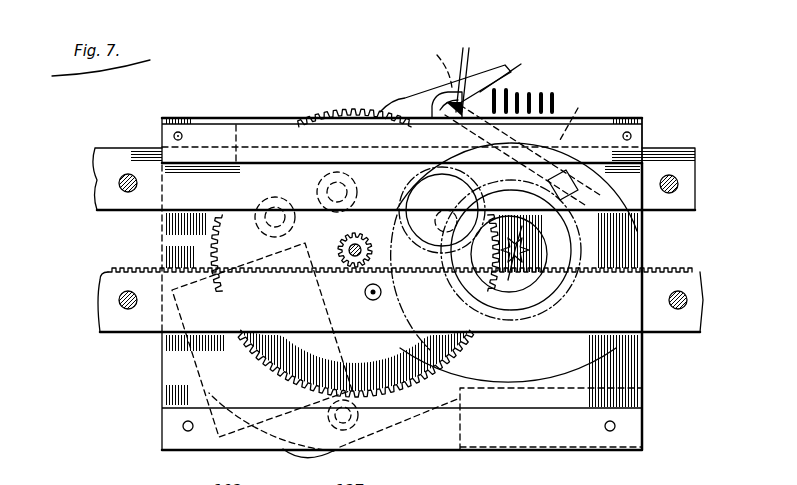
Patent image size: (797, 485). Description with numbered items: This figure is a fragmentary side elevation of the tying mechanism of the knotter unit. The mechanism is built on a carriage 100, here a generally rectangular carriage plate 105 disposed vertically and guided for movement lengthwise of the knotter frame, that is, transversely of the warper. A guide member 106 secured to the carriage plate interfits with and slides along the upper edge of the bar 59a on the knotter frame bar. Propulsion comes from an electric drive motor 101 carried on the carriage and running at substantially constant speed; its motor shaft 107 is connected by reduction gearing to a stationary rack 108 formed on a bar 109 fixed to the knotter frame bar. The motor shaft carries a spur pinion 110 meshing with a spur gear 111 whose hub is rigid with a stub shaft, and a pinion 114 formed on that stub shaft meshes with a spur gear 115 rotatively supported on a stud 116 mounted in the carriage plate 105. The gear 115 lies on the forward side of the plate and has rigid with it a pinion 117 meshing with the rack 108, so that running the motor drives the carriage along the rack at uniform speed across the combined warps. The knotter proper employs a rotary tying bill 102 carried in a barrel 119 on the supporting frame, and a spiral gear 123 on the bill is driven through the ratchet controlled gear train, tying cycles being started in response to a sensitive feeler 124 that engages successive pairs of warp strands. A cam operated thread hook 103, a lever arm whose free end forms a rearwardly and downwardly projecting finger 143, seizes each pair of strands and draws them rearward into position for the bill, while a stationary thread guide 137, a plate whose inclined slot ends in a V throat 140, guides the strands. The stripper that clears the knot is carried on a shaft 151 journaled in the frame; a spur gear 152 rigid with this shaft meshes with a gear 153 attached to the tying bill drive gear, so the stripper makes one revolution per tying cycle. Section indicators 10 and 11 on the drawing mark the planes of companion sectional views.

The carriage 100 is at (157, 130).
The guide member 106 is at (219, 133).
The bar 59a is at (688, 151).
The bar 109 is at (700, 287).
The stationary rack 108 is at (143, 266).
The carriage plate 105 is at (625, 383).
The spur gear 115 is at (366, 92).
The pinion 117 is at (340, 246).
The stud 116 is at (335, 225).
The motor shaft 107 is at (375, 300).
The shaft 151 is at (426, 198).
The pinion 114 is at (527, 250).
The spur gear 152 is at (545, 300).
The gear 153 is at (548, 320).
The spur gear 111 is at (545, 378).
The spur pinion 110 is at (322, 312).
The electric drive motor 101 is at (285, 455).
The spiral gear 123 is at (580, 197).
The thread hook 103 is at (490, 88).
The feeler 124 is at (475, 70).
The tying bill 102 is at (433, 79).
The thread guide 137 is at (516, 74).
The V opening or throat 140 is at (505, 88).
The finger 143 is at (512, 95).
The barrel 119 is at (580, 106).
The section line 11 is at (308, 112).
The section line 10 is at (620, 67).